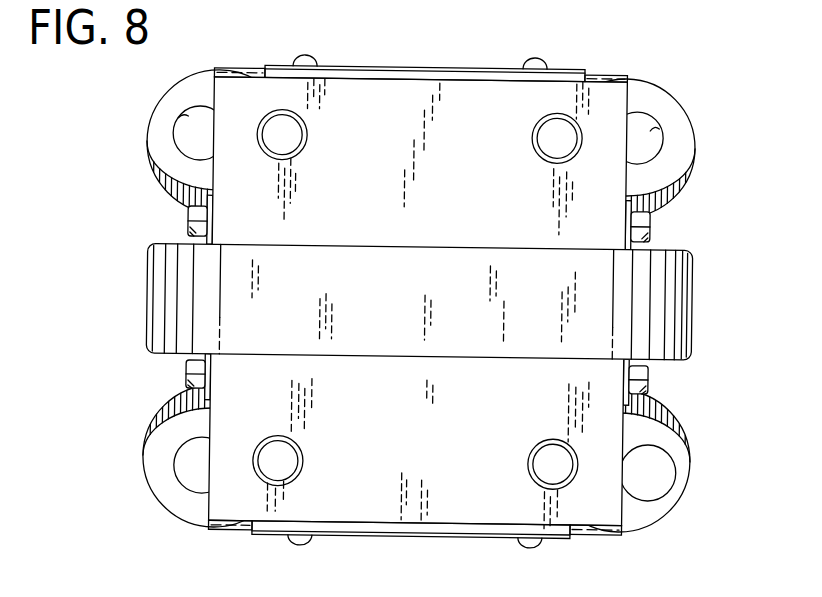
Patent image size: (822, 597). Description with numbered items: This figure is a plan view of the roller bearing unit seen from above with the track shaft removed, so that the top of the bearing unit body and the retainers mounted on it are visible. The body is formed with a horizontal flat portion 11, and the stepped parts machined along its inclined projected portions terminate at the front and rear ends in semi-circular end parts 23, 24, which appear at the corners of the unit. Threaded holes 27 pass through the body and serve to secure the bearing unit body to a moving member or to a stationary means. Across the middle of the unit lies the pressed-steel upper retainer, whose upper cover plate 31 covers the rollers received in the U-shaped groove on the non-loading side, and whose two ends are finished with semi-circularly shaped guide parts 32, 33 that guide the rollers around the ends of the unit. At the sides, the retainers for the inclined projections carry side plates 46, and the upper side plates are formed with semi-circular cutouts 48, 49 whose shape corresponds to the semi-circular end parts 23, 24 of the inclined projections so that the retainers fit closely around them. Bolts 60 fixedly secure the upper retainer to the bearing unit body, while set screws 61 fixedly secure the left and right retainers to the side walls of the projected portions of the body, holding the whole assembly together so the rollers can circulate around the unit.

The flat portion 11 is at (390, 90).
The semi-circular end part 23 is at (195, 143).
The semi-circular end part 24 is at (635, 117).
The threaded hole 27 is at (270, 124).
The upper cover plate 31 is at (439, 243).
The semi-circularly shaped guide part 32 is at (148, 281).
The semi-circularly shaped guide part 33 is at (695, 286).
The side plate 46 is at (159, 105).
The semi-circular cutout 48 is at (653, 125).
The semi-circular cutout 49 is at (185, 121).
The bolt 60 is at (193, 226).
The set screw 61 is at (302, 59).